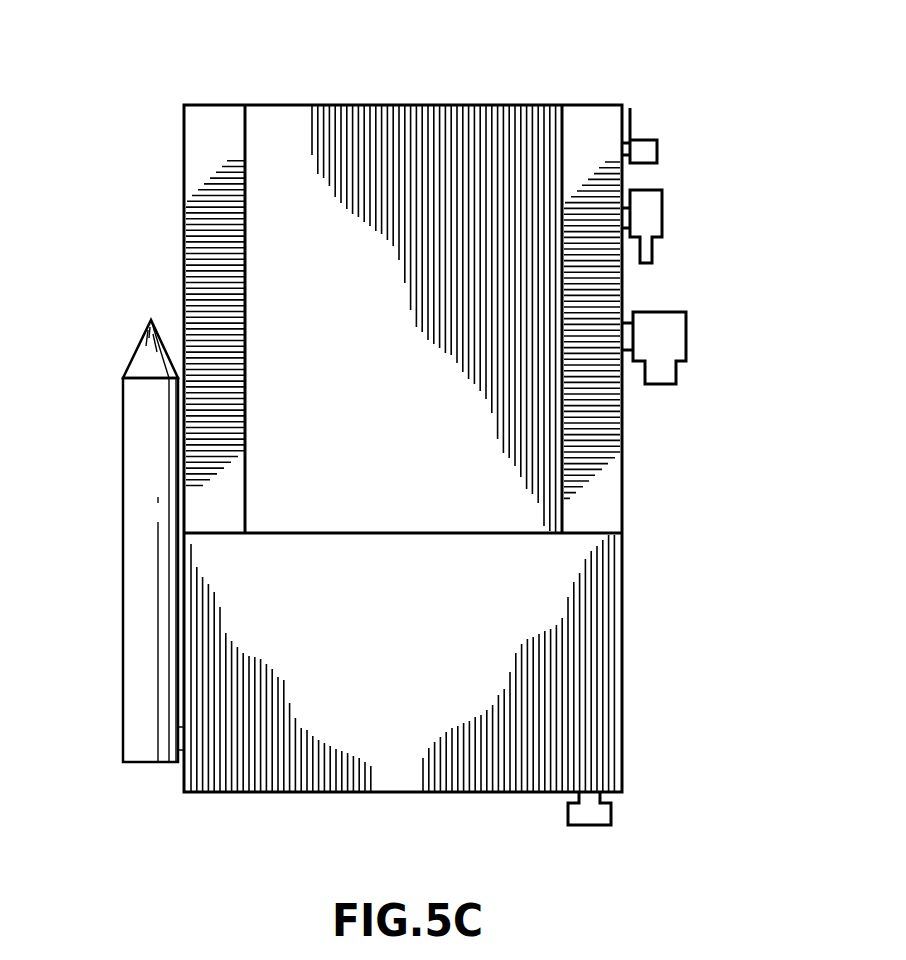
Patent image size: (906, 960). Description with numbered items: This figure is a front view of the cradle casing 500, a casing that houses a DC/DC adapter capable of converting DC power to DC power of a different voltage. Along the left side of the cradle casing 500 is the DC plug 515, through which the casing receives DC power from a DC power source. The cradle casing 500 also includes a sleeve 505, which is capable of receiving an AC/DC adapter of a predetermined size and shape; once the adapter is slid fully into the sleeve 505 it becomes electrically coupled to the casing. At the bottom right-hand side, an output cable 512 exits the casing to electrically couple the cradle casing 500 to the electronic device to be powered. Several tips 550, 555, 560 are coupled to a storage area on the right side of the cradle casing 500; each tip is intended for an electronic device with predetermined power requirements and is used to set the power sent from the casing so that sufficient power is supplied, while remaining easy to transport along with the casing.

The cradle casing 500 is at (227, 104).
The sleeve 505 is at (207, 148).
The output cable 512 is at (611, 811).
The DC plug 515 is at (122, 410).
The tip 550 is at (657, 152).
The tip 555 is at (662, 212).
The tip 560 is at (686, 335).